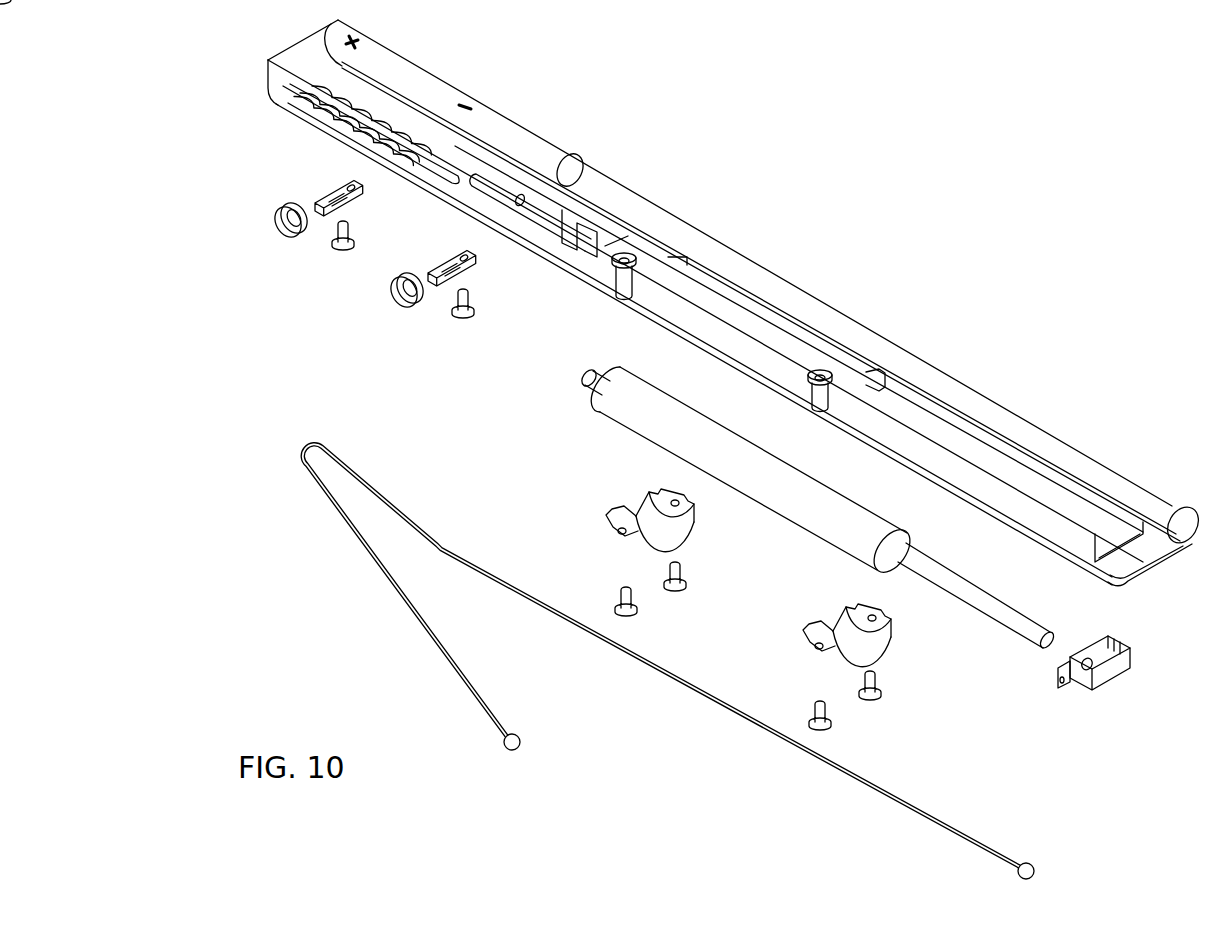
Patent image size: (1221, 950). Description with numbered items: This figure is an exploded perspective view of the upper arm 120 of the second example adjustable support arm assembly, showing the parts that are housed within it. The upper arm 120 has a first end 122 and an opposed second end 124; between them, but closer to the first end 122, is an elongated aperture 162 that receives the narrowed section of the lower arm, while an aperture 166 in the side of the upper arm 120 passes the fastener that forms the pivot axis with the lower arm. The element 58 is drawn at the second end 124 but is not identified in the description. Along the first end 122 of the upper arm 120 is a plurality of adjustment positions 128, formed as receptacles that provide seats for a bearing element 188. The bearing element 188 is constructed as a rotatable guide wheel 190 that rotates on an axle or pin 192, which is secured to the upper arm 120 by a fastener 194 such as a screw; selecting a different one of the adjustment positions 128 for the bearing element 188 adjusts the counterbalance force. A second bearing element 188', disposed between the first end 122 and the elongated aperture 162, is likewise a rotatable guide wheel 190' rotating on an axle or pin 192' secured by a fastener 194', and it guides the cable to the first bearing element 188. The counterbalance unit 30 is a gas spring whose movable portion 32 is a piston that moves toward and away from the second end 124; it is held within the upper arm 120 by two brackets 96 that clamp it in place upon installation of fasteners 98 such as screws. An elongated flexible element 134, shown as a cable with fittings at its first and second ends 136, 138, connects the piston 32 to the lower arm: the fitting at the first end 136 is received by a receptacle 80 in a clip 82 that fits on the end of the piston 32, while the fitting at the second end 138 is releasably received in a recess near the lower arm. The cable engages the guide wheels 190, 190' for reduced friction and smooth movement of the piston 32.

The upper arm 120 is at (849, 306).
The first end 122 is at (383, 57).
The second end 124 is at (1153, 505).
The aperture 58 is at (1190, 506).
The aperture 166 is at (582, 172).
The elongated aperture 162 is at (552, 243).
The adjustment positions 128 is at (368, 144).
The bearing element 188 is at (272, 212).
The guide wheel 190 is at (262, 242).
The axle or pin 192 is at (315, 245).
The fastener 194 is at (344, 266).
The second bearing element 188' is at (472, 319).
The guide wheel 190' is at (380, 316).
The axle or pin 192' is at (434, 318).
The fastener 194' is at (462, 348).
The counterbalance unit 30 is at (630, 413).
The movable portion 32 is at (973, 602).
The brackets 96 is at (643, 518).
The fasteners 98 is at (670, 565).
The receptacle 80 is at (1058, 687).
The clip 82 is at (1100, 682).
The elongated flexible element 134 is at (672, 678).
The first end 136 is at (1035, 860).
The second end 138 is at (522, 742).